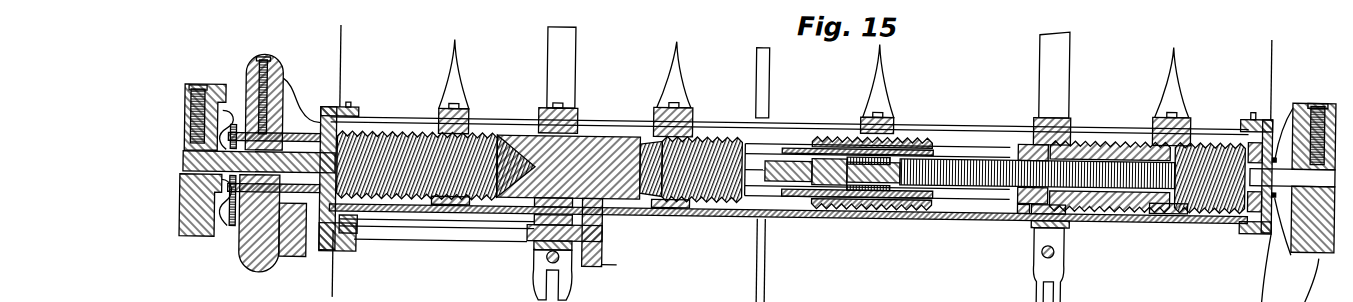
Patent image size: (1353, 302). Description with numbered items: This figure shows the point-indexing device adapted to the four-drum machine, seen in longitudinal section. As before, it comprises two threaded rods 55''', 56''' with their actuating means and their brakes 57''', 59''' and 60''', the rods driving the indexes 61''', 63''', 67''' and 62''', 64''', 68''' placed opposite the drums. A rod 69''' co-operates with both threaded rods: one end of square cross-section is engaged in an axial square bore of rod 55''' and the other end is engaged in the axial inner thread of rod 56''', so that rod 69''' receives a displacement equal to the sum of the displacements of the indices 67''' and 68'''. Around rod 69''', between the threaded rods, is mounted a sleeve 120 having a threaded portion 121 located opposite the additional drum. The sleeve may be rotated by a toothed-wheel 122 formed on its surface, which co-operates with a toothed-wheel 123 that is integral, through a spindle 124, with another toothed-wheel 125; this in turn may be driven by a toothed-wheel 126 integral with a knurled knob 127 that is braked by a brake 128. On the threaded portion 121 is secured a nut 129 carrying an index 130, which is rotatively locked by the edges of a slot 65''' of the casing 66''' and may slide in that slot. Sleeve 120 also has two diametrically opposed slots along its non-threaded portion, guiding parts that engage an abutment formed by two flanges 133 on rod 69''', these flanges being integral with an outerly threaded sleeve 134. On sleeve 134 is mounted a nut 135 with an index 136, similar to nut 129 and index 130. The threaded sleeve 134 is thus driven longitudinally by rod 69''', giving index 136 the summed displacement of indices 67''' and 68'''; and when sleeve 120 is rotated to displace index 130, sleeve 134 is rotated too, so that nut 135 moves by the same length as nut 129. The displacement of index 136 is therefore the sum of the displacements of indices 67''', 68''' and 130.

The threaded rod 55''' is at (437, 137).
The threaded rod 56''' is at (1210, 204).
The brake 57''' is at (258, 178).
The brake 59''' is at (226, 201).
The brake 60''' is at (1298, 202).
The index 61''' is at (556, 134).
The index 62''' is at (1266, 147).
The index 63''' is at (476, 128).
The index 64''' is at (1193, 143).
The slot 65''' is at (789, 148).
The casing 66''' is at (778, 206).
The index 67''' is at (472, 70).
The index 68''' is at (1188, 80).
The rod 69''' is at (835, 217).
The sleeve 120 is at (973, 149).
The threaded portion 121 is at (737, 147).
The toothed-wheel 122 is at (580, 134).
The toothed-wheel 123 is at (600, 256).
The spindle 124 is at (433, 237).
The toothed-wheel 125 is at (300, 256).
The toothed-wheel 126 is at (318, 115).
The knurled knob 127 is at (268, 66).
The brake 128 is at (288, 138).
The nut 129 is at (690, 110).
The index 130 is at (678, 77).
The flanges 133 is at (863, 215).
The outerly threaded sleeve 134 is at (920, 137).
The nut 135 is at (895, 112).
The index 136 is at (878, 75).